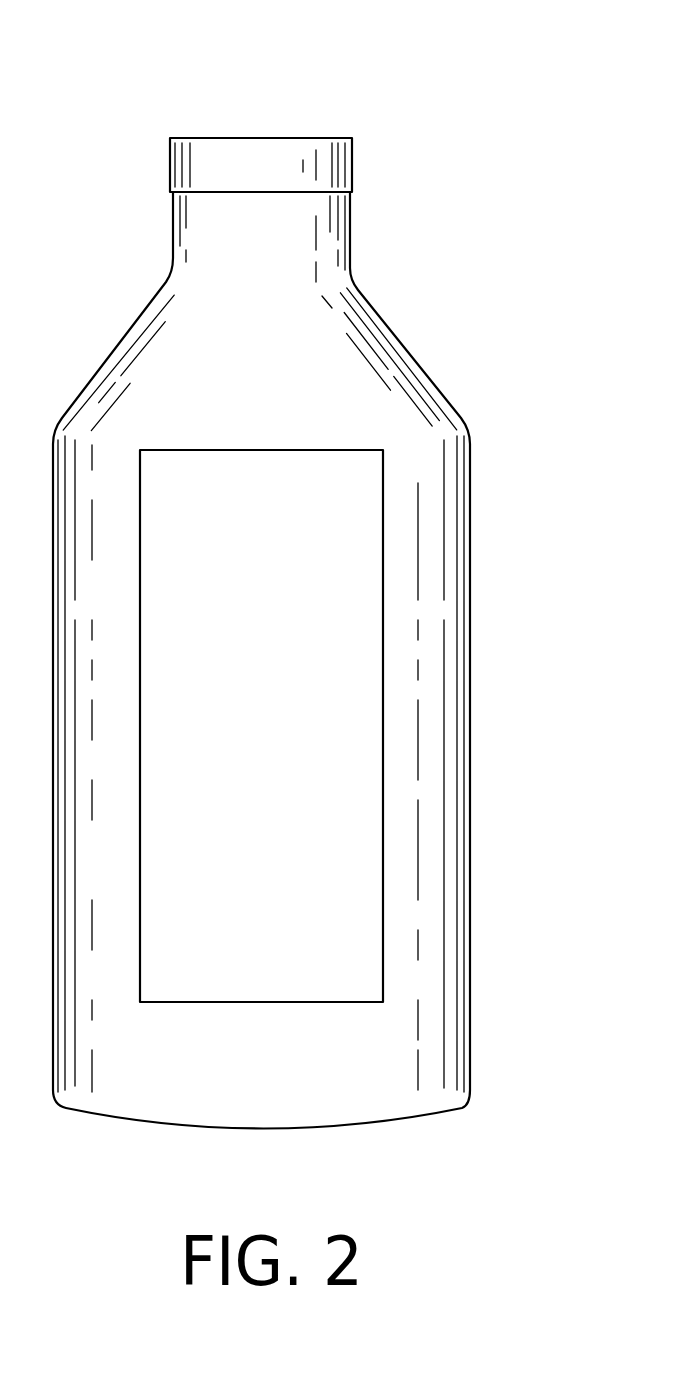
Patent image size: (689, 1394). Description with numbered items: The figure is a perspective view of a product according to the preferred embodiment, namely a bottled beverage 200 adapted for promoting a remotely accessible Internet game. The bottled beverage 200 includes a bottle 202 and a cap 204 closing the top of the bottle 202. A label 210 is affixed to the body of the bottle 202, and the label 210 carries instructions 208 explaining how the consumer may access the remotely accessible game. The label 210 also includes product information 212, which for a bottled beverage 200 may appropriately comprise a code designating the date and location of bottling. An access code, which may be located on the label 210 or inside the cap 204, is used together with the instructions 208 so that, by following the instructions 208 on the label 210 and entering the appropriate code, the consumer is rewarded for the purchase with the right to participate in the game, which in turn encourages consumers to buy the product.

The bottled beverage 200 is at (410, 70).
The bottle 202 is at (470, 552).
The cap 204 is at (352, 158).
The instructions 208 is at (352, 735).
The label 210 is at (383, 470).
The product information 212 is at (325, 960).